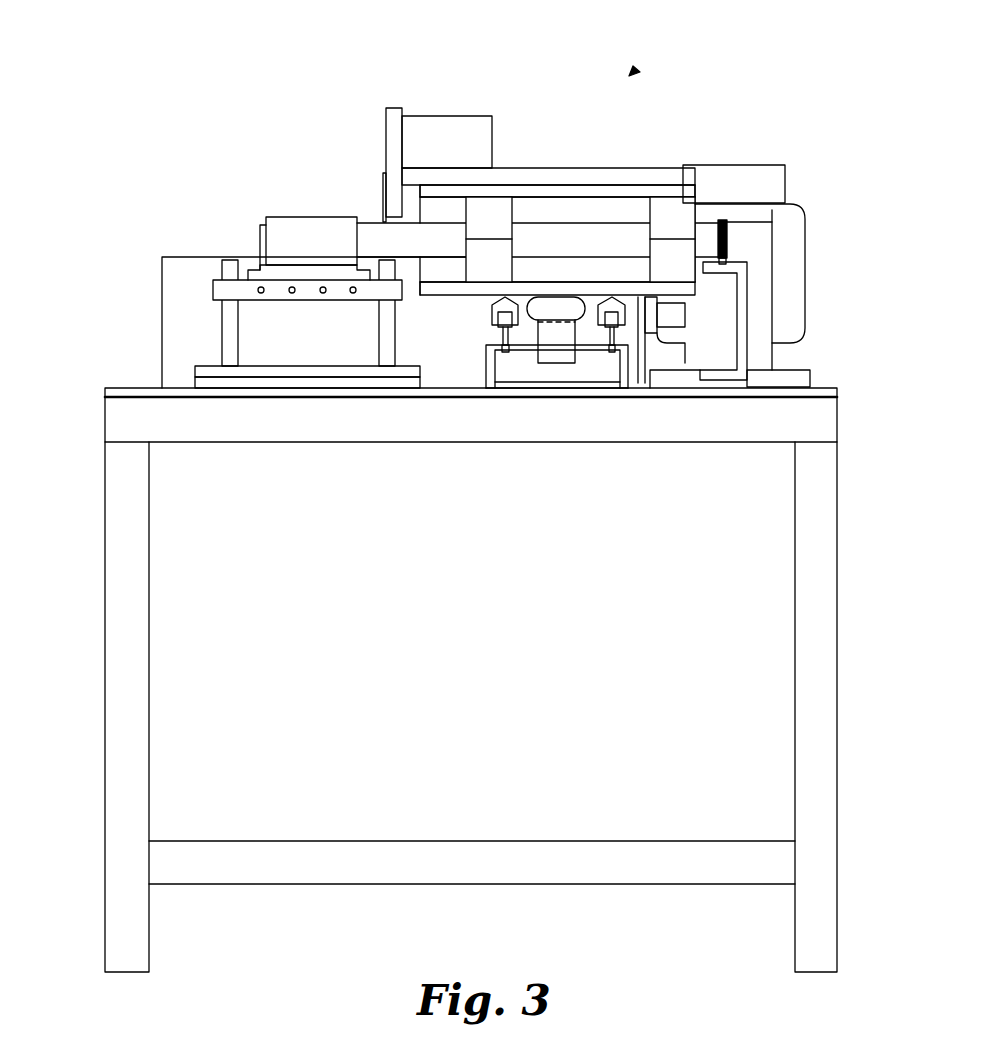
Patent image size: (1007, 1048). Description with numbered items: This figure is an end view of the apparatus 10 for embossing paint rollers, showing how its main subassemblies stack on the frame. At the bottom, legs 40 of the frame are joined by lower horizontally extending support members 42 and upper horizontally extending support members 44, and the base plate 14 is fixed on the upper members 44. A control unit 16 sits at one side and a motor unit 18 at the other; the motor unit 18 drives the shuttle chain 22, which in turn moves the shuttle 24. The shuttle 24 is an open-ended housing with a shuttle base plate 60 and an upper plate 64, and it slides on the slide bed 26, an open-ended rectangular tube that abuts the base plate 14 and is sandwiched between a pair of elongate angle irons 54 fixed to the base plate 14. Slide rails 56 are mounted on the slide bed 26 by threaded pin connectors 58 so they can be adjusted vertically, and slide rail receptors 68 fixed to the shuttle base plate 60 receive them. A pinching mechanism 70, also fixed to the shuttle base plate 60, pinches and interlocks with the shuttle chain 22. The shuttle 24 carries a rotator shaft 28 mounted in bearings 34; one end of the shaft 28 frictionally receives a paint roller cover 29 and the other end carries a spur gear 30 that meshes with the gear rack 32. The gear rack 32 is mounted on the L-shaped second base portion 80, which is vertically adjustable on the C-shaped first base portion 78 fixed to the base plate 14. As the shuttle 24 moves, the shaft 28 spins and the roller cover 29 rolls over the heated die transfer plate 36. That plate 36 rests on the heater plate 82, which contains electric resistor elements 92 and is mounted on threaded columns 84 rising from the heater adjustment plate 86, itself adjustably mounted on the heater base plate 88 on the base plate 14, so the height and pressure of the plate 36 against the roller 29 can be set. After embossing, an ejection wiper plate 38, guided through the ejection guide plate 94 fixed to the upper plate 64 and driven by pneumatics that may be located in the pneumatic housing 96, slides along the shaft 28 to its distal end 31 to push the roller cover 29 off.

The apparatus for embossing paint rollers 10 is at (629, 76).
The base plate 14 is at (245, 398).
The control unit 16 is at (162, 267).
The motor unit 18 is at (743, 172).
The shuttle chain 22 is at (547, 358).
The shuttle 24 is at (502, 168).
The slide bed 26 is at (565, 390).
The rotator shaft 28 is at (260, 232).
The paint roller cover 29 is at (295, 217).
The spur gear 30 is at (727, 237).
The distal end 31 is at (260, 245).
The gear rack 32 is at (727, 257).
The bearing 34 is at (663, 197).
The die transfer plate 36 is at (337, 283).
The ejection wiper plate 38 is at (383, 188).
The leg 40 is at (149, 593).
The lower horizontally extending support member 42 is at (218, 841).
The upper horizontally extending support member 44 is at (105, 412).
The elongate angle iron 54 is at (477, 391).
The slide rail 56 is at (500, 328).
The threaded pin connector 58 is at (612, 353).
The shuttle base plate 60 is at (428, 297).
The upper plate 64 is at (557, 168).
The slide rail receptor 68 is at (492, 308).
The pinching mechanism 70 is at (580, 297).
The rack gear first elongate base portion 78 is at (720, 390).
The rack gear second elongate base portion 80 is at (752, 308).
The heater plate 82 is at (212, 288).
The threaded column 84 is at (222, 330).
The heater adjustment plate 86 is at (197, 366).
The heater base plate 88 is at (330, 390).
The electric resistor element 92 is at (292, 294).
The ejection guide plate 94 is at (386, 115).
The pneumatic housing 96 is at (437, 151).